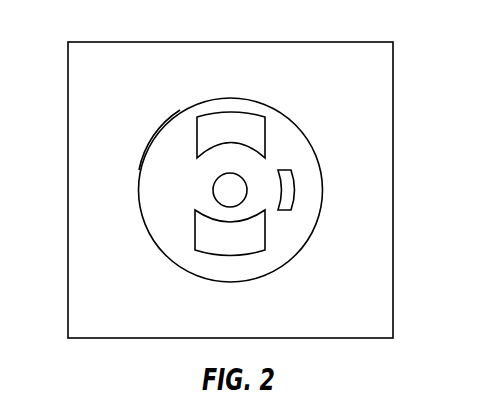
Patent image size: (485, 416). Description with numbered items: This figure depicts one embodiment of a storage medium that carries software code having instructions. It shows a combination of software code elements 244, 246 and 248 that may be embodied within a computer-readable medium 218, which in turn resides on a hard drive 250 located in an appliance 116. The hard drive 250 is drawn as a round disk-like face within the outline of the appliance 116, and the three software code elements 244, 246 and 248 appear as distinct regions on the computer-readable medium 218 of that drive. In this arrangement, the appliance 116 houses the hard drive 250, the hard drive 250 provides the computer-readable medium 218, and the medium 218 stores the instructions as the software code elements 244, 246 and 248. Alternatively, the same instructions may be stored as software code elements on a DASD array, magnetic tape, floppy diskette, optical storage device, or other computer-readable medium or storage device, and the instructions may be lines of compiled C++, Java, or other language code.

The appliance 116 is at (123, 55).
The computer-readable medium 218 is at (188, 206).
The software code element 244 is at (231, 112).
The software code element 246 is at (295, 188).
The software code element 248 is at (230, 256).
The hard drive 250 is at (160, 150).